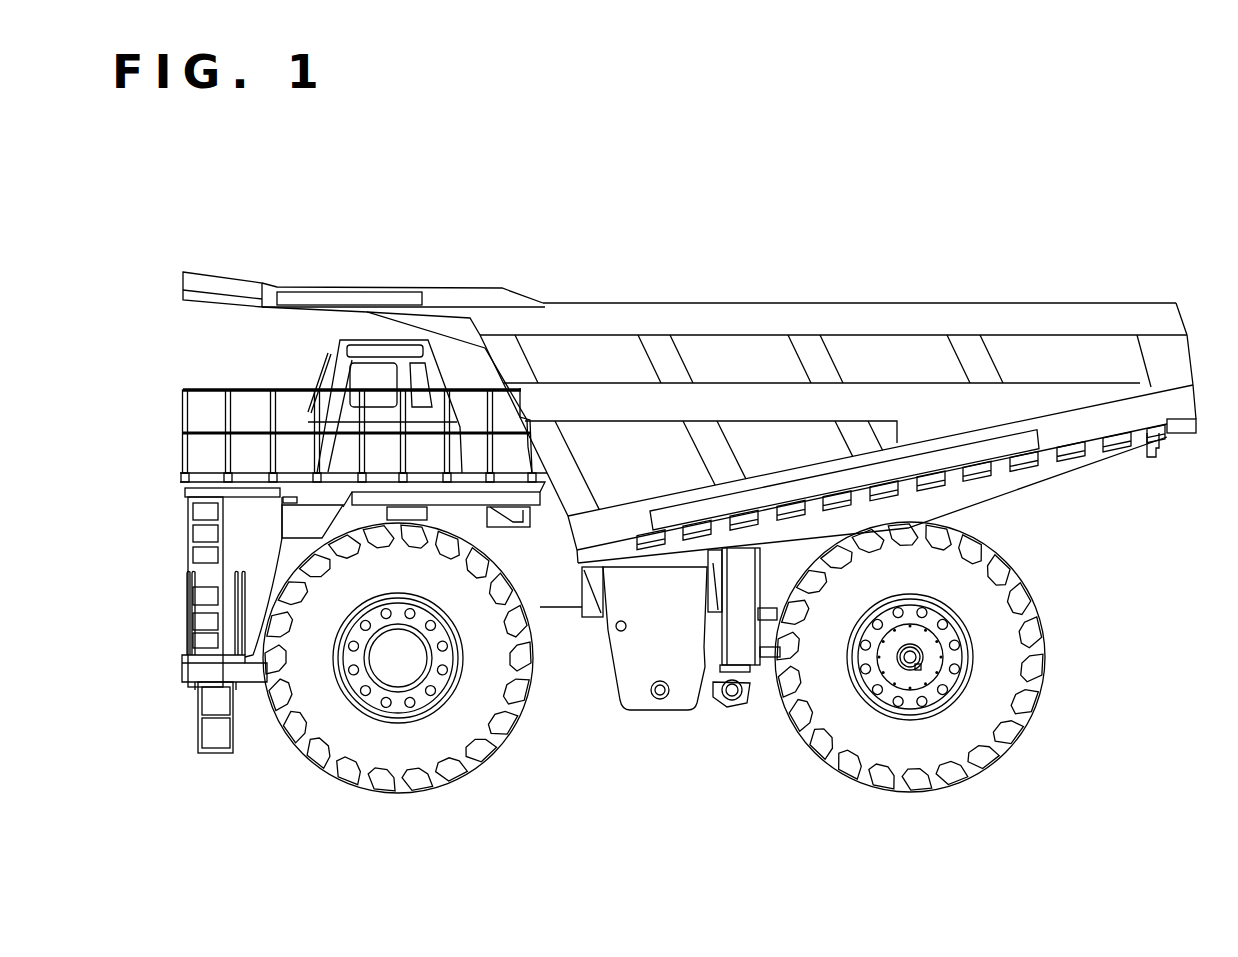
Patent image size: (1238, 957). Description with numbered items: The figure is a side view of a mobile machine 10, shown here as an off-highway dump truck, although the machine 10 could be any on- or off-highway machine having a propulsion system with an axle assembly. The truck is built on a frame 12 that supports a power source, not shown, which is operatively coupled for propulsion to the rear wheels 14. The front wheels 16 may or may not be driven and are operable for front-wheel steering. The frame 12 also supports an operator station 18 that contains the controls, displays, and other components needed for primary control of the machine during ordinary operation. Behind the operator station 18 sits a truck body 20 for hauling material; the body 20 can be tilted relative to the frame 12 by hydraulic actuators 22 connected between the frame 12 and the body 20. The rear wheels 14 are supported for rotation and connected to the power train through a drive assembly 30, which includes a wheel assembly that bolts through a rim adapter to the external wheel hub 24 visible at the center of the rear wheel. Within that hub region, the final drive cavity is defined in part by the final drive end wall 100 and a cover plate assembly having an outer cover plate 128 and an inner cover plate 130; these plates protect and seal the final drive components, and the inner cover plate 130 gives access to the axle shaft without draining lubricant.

The mobile machine 10 is at (1047, 174).
The frame 12 is at (557, 615).
The rear wheels 14 is at (1023, 700).
The front wheels 16 is at (453, 757).
The operator station 18 is at (343, 350).
The truck body 20 is at (808, 303).
The hydraulic actuators 22 is at (747, 645).
The wheel hub 24 is at (890, 720).
The drive assembly 30 is at (1044, 535).
The final drive end wall 100 is at (930, 662).
The outer cover plate 128 is at (923, 638).
The inner cover plate 130 is at (913, 667).